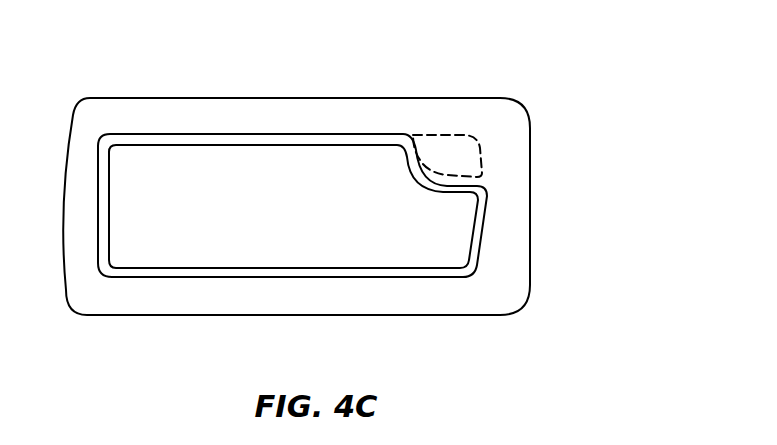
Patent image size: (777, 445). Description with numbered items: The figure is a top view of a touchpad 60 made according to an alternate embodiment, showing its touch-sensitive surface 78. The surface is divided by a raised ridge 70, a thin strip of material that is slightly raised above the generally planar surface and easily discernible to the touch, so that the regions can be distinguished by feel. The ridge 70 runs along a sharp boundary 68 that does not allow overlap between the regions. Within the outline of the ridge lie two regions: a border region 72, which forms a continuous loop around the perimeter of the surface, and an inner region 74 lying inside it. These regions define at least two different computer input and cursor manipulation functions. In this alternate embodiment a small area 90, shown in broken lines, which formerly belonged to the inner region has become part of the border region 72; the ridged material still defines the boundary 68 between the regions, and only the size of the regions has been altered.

The touchpad 60 is at (588, 182).
The boundary 68 is at (217, 277).
The ridge 70 is at (170, 134).
The border region 72 is at (328, 122).
The inner region 74 is at (273, 208).
The touch-sensitive surface 78 is at (410, 121).
The small area 90 is at (467, 158).